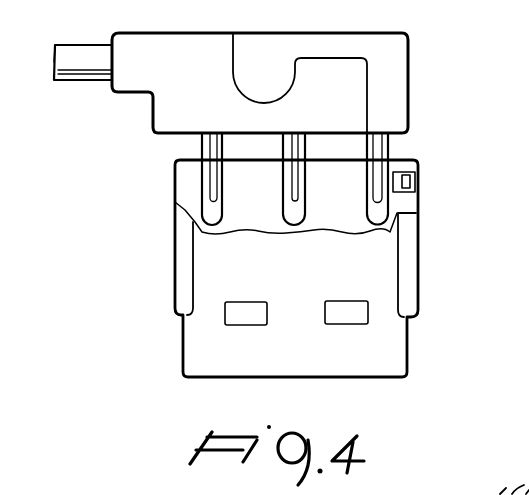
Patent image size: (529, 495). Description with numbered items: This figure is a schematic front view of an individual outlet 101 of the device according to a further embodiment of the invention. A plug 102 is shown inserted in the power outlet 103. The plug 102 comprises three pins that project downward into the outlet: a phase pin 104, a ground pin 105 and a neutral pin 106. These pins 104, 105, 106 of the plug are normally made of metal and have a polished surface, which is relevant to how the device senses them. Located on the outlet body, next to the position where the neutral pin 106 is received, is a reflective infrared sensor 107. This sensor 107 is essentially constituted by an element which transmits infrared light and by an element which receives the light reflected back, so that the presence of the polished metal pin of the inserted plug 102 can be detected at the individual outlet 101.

The individual outlet 101 is at (324, 284).
The plug 102 is at (397, 70).
The power outlet 103 is at (180, 340).
The phase pin 104 is at (203, 142).
The ground pin 105 is at (288, 172).
The neutral pin 106 is at (373, 150).
The reflective infrared sensor 107 is at (412, 185).